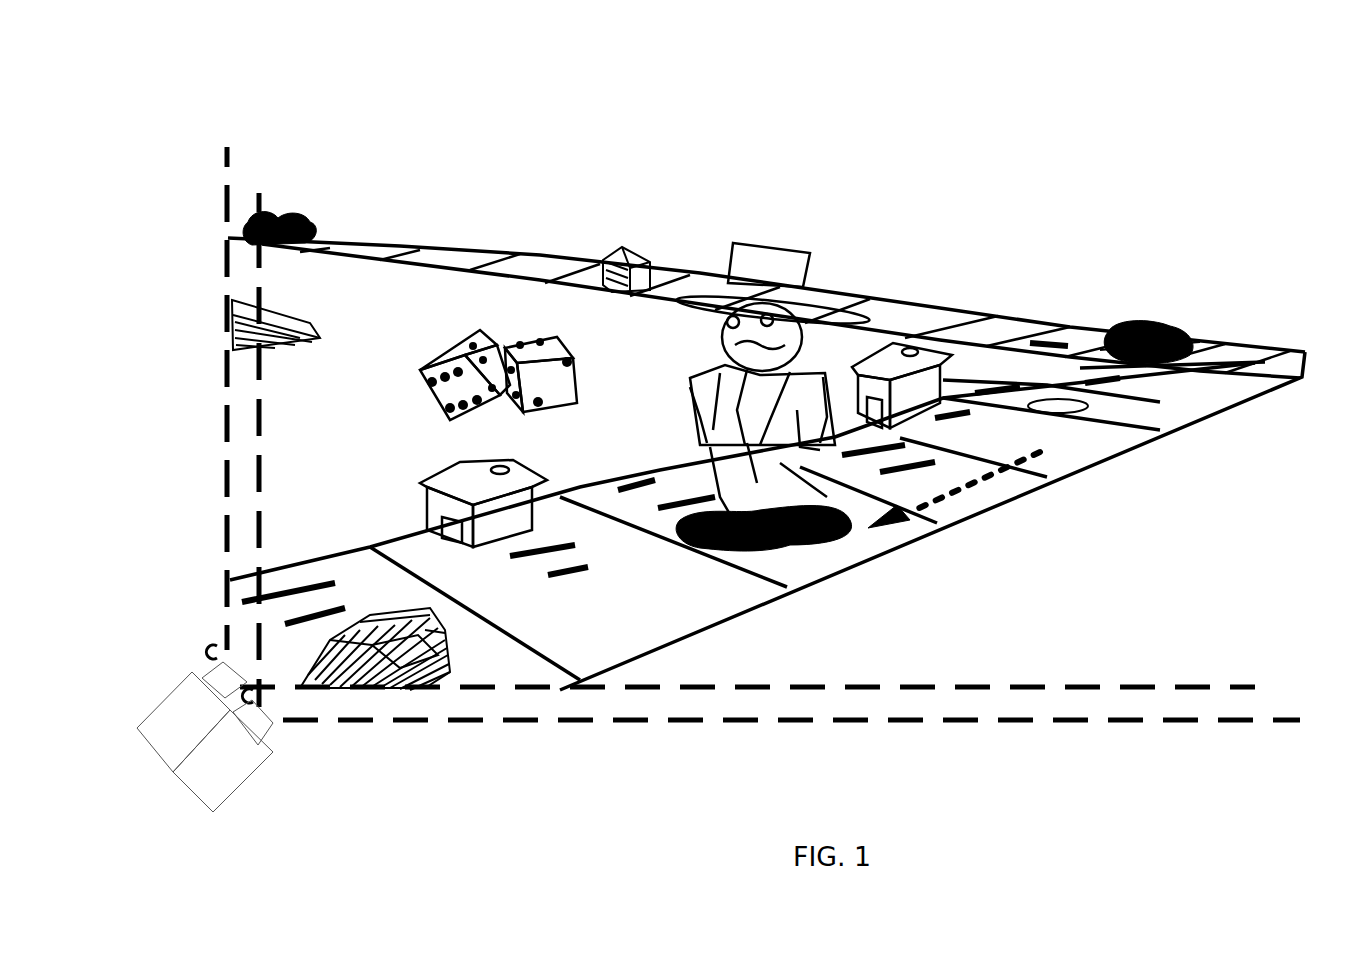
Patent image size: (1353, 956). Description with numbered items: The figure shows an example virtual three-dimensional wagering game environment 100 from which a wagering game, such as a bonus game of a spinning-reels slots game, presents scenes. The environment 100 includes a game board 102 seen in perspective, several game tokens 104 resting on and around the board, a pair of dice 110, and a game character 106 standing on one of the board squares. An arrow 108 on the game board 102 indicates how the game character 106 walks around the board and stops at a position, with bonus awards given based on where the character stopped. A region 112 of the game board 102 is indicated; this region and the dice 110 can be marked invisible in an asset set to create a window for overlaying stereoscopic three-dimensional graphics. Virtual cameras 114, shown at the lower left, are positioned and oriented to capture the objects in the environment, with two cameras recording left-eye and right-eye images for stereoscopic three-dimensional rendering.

The virtual 3-D wagering game environment 100 is at (275, 24).
The game board 102 is at (1188, 440).
The game tokens 104 is at (397, 232).
The game character 106 is at (690, 398).
The arrow 108 is at (975, 488).
The dice 110 is at (428, 352).
The region 112 is at (215, 322).
The virtual cameras 114 is at (158, 705).